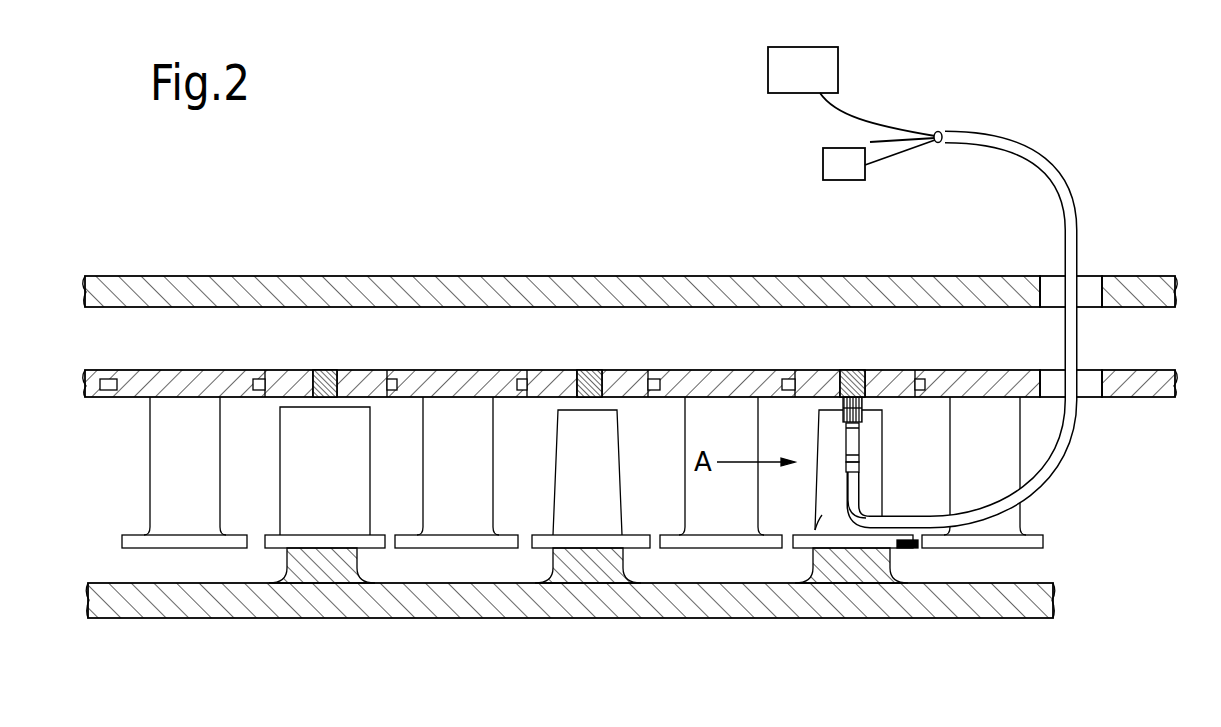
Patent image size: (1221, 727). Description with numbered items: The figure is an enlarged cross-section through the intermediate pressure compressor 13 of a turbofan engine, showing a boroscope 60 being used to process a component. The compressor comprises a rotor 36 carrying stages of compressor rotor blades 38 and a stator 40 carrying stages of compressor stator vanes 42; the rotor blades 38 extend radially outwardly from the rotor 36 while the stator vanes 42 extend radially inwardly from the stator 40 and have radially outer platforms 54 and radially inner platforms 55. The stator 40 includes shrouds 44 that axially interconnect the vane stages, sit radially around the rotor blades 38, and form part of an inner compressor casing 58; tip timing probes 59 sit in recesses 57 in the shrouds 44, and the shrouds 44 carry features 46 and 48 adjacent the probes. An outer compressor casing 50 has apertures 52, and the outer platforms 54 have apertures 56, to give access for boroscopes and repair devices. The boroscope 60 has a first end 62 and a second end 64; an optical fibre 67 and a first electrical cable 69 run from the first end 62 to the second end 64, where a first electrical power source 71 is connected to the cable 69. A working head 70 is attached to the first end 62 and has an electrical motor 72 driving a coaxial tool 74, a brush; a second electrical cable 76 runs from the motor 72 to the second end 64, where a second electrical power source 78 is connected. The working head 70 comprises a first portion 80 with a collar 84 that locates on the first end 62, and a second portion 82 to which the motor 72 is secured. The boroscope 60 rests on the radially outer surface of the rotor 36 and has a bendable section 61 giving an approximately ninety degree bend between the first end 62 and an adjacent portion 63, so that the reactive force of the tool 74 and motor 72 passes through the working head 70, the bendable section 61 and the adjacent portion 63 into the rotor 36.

The intermediate pressure compressor 13 is at (648, 259).
The stator 40 is at (546, 261).
The rotor 36 is at (608, 600).
The compressor rotor blades 38 is at (309, 481).
The compressor stator vanes 42 is at (170, 478).
The shrouds 44 is at (378, 400).
The groove 46 is at (277, 380).
The inner casing 48 is at (272, 405).
The outer compressor casing 50 is at (797, 288).
The apertures 52 is at (1045, 283).
The radially outer platforms 54 is at (1152, 380).
The radially inner platforms 55 is at (140, 542).
The apertures 56 is at (1095, 376).
The recesses 57 is at (327, 375).
The inner compressor casing 58 is at (1145, 366).
The tip timing probes 59 is at (338, 380).
The boroscope 60 is at (1008, 145).
The bendable section 61 is at (863, 510).
The first end 62 is at (876, 463).
The adjacent portion 63 is at (905, 548).
The second end 64 is at (943, 130).
The optical fibre 67 is at (892, 138).
The first electrical cable 69 is at (863, 120).
The working head 70 is at (831, 434).
The first electrical power source 71 is at (789, 84).
The electrical motor 72 is at (862, 420).
The tool 74 is at (843, 408).
The second electrical cable 76 is at (890, 152).
The second electrical power source 78 is at (835, 165).
The first portion 80 is at (860, 448).
The second portion 82 is at (857, 465).
The collar 84 is at (845, 473).